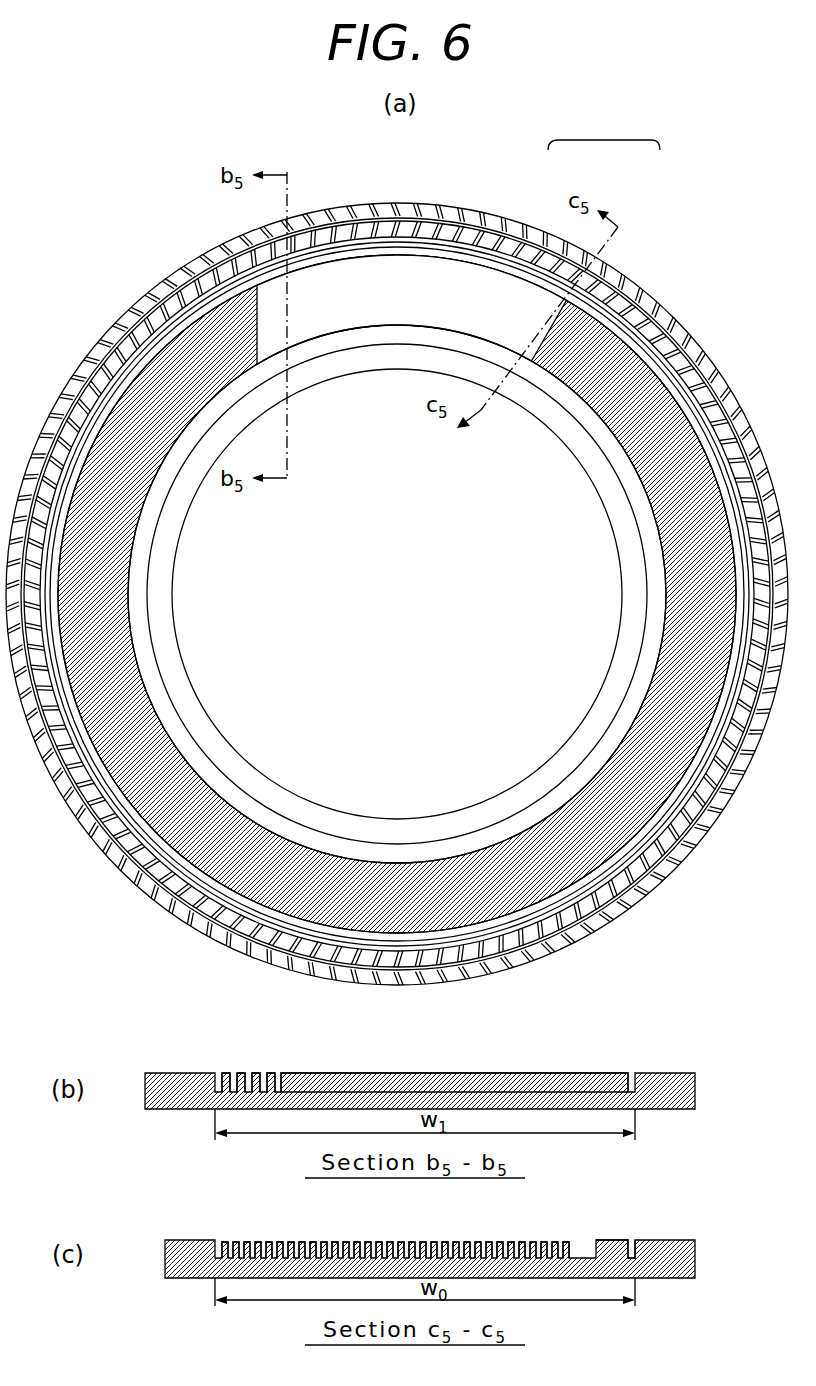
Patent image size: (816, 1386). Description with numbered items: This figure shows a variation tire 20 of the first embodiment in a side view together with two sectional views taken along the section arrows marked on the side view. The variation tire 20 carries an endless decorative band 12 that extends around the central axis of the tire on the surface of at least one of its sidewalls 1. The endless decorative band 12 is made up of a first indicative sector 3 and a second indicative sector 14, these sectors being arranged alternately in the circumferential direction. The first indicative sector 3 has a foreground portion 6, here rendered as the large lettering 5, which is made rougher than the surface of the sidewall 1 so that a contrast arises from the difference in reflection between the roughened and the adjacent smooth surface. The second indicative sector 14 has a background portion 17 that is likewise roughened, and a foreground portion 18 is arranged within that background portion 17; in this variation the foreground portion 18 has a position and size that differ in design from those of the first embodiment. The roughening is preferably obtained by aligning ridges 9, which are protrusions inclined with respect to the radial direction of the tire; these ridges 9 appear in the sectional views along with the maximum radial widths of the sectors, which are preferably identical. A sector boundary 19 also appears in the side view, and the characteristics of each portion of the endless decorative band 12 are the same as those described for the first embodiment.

The sidewall 1 is at (305, 262).
The first indicative sector 3 is at (551, 285).
The large marking (TIRE letters) 5 is at (468, 265).
The foreground portion 6 is at (525, 262).
The ridges 9 is at (250, 1075).
The endless decorative band 12 is at (604, 123).
The second indicative sector 14 is at (594, 315).
The background portion 17 is at (665, 398).
The foreground portion 18 is at (655, 322).
The display region 19 is at (325, 267).
The variation tire 20 is at (666, 224).